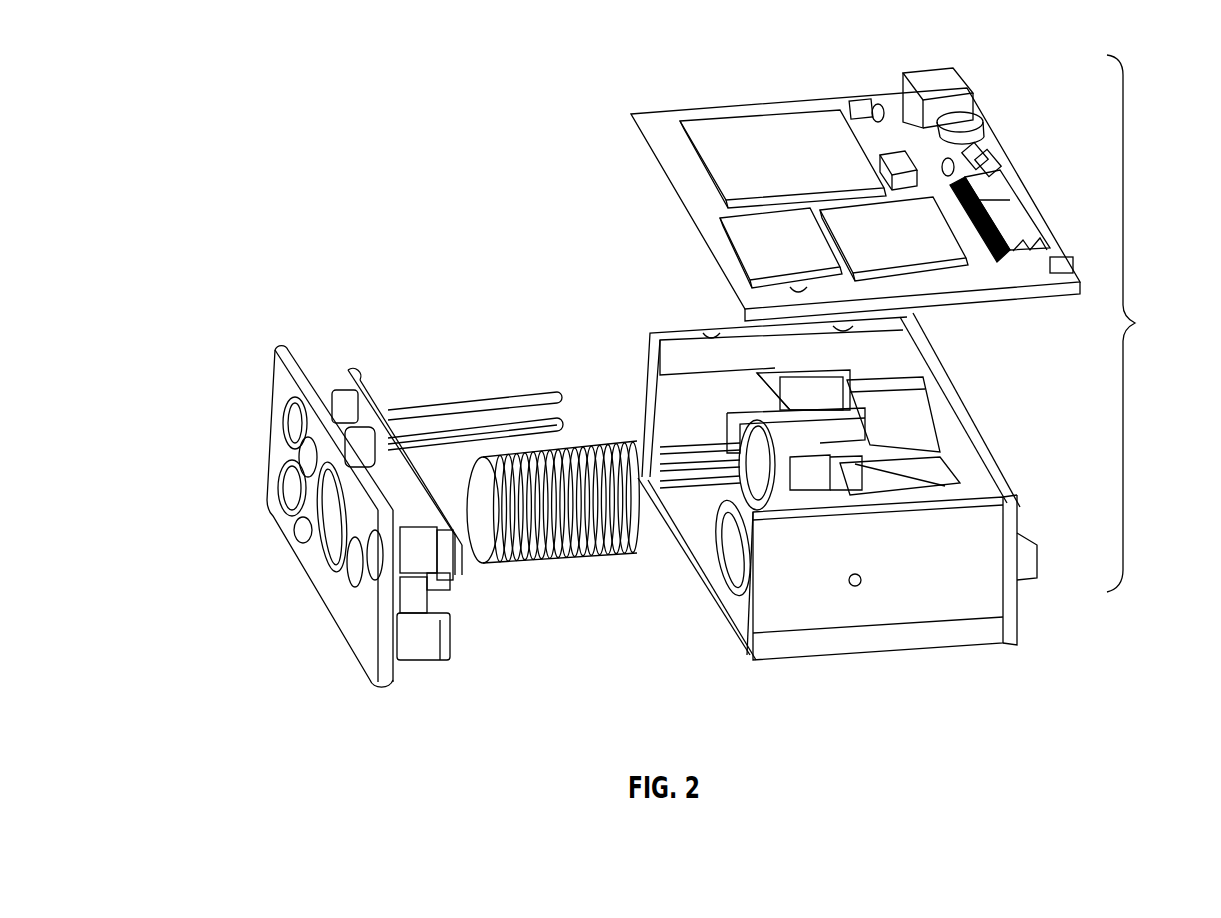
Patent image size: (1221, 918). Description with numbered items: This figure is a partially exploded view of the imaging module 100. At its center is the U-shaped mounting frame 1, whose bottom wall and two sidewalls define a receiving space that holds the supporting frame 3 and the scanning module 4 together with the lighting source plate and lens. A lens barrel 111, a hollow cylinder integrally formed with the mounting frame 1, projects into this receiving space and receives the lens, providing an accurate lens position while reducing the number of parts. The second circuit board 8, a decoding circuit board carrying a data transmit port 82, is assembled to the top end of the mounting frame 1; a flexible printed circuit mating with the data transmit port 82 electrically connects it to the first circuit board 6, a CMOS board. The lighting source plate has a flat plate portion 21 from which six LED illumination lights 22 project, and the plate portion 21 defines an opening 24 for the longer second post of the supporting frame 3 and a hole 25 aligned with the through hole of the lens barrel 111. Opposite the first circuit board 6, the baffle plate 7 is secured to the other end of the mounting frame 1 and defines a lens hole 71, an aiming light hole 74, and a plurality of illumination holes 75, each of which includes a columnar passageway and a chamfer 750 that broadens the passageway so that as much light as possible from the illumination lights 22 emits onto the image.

The imaging module 100 is at (1152, 323).
The mounting frame 1 is at (913, 608).
The lens barrel 111 is at (793, 427).
The supporting frame 3 is at (910, 457).
The scanning module 4 is at (1005, 505).
The first circuit board 6 is at (1010, 483).
The baffle plate 7 is at (388, 665).
The second circuit board 8 is at (855, 199).
The data transmit port 82 is at (1007, 210).
The plate portion 21 is at (457, 558).
The illumination lights 22 is at (422, 555).
The opening 24 is at (445, 618).
The hole 25 is at (388, 477).
The lens hole 71 is at (322, 543).
The aiming light hole 74 is at (350, 572).
The illumination holes 75 is at (365, 658).
The chamfer 750 is at (305, 493).